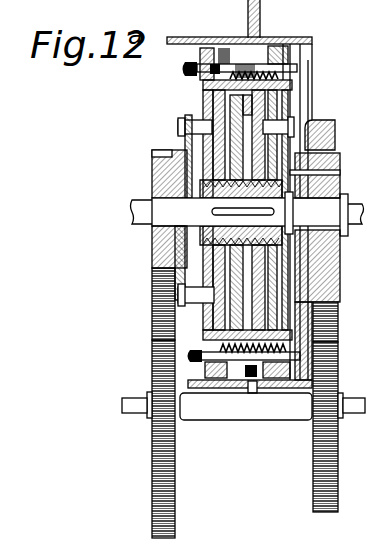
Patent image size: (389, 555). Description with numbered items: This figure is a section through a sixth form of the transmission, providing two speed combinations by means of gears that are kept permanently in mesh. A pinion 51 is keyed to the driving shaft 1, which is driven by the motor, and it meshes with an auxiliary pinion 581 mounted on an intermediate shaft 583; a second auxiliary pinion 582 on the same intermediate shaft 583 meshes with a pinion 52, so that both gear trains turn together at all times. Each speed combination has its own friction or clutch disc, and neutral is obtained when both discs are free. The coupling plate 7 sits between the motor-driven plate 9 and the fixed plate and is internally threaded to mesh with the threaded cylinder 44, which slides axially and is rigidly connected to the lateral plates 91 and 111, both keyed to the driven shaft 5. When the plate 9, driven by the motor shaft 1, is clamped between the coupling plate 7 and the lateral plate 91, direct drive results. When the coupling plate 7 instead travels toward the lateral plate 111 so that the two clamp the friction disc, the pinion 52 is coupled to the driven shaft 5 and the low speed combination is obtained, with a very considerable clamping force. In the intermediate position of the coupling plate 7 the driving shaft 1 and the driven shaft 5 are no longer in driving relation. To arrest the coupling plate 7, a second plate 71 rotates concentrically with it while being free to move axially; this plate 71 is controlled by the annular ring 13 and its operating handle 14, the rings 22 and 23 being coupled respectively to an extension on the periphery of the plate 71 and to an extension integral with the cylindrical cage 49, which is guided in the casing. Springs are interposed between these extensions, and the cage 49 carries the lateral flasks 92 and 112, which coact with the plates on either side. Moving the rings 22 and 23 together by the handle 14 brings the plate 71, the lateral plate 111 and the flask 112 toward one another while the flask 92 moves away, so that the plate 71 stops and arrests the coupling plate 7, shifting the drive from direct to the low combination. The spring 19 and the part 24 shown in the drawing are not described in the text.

The driving shaft 1 is at (142, 200).
The driven shaft 5 is at (350, 222).
The pinion 51 is at (160, 240).
The pinion 52 is at (322, 285).
The coupling plate 7 is at (186, 160).
The second plate 71 is at (212, 110).
The plate 9 is at (215, 283).
The lateral plate 91 is at (232, 143).
The lateral flask 92 is at (212, 90).
The lateral plate 111 is at (270, 140).
The lateral flask 112 is at (290, 110).
The annular ring 13 is at (262, 44).
The operating handle 14 is at (248, 36).
The spring 19 is at (290, 85).
The ring 22 is at (200, 62).
The ring 23 is at (296, 60).
The collar 24 is at (212, 74).
The cylinder 44 is at (300, 186).
The cylindrical cage 49 is at (290, 98).
The auxiliary pinion 581 is at (176, 484).
The auxiliary pinion 582 is at (338, 480).
The intermediate shaft 583 is at (246, 408).